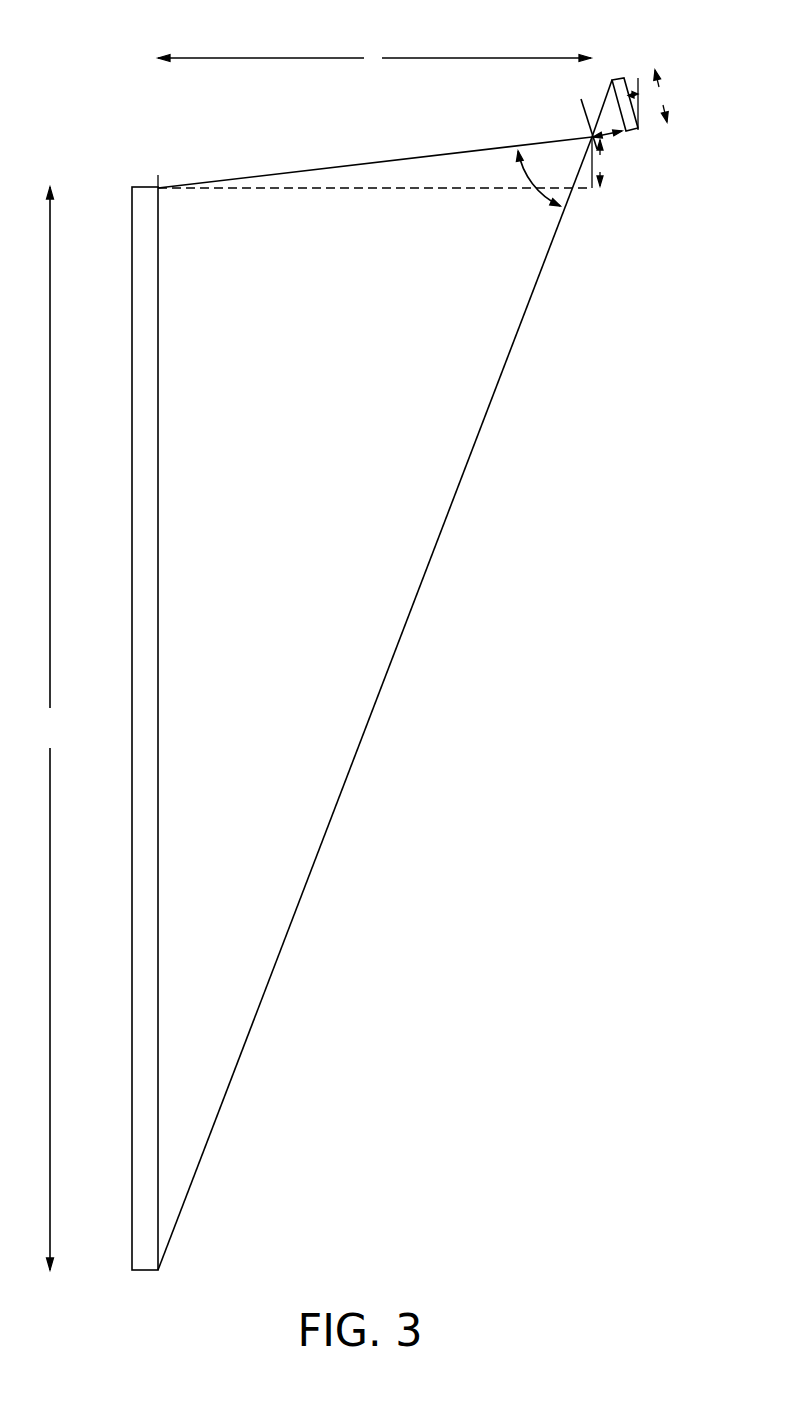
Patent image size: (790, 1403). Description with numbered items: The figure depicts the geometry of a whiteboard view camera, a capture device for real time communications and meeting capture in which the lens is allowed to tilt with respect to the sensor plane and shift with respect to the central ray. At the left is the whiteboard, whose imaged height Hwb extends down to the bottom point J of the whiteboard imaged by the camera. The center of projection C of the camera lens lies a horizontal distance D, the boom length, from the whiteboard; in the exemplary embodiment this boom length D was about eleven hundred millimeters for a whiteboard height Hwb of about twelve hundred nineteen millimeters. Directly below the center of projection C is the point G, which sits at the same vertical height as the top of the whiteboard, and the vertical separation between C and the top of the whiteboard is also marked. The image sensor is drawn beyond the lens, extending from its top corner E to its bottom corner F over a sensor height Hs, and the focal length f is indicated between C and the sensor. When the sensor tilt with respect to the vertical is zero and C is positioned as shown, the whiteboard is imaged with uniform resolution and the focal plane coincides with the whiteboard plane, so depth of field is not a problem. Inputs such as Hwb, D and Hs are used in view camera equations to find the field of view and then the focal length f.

The height of the whiteboard imaged by the camera Hwb is at (51, 728).
The horizontal distance between the whiteboard and the center of projection D is at (374, 58).
The center of projection of the camera C is at (375, 153).
The bottom point of the whiteboard imaged by the camera J is at (375, 713).
The point below the center of projection at the same vertical height as the top of t G is at (597, 170).
The height of lens center above whiteboard top Ht is at (600, 163).
The element lens is at (579, 101).
The top of image sensor E is at (603, 101).
The bottom of the image sensor F is at (625, 106).
The focal length for the camera f is at (607, 129).
The height of the image sensor Hs is at (661, 96).